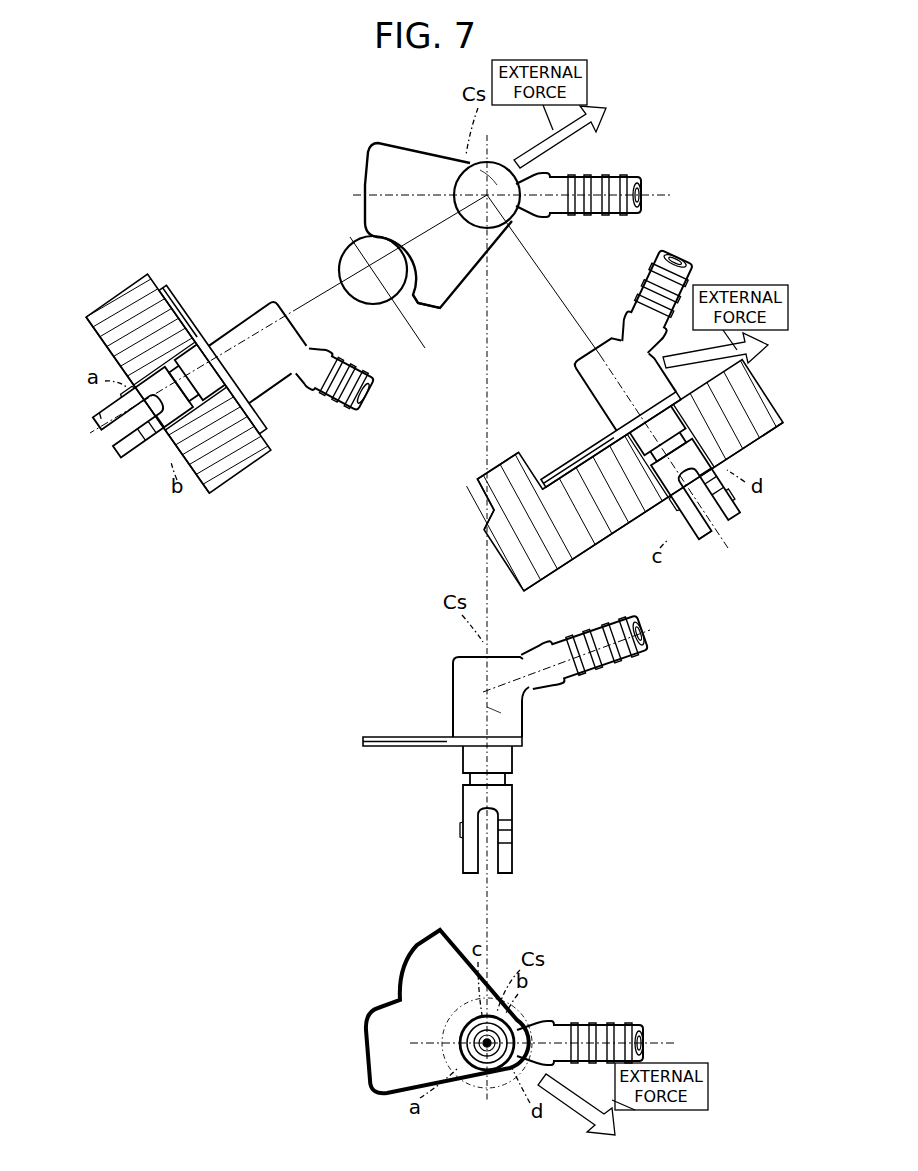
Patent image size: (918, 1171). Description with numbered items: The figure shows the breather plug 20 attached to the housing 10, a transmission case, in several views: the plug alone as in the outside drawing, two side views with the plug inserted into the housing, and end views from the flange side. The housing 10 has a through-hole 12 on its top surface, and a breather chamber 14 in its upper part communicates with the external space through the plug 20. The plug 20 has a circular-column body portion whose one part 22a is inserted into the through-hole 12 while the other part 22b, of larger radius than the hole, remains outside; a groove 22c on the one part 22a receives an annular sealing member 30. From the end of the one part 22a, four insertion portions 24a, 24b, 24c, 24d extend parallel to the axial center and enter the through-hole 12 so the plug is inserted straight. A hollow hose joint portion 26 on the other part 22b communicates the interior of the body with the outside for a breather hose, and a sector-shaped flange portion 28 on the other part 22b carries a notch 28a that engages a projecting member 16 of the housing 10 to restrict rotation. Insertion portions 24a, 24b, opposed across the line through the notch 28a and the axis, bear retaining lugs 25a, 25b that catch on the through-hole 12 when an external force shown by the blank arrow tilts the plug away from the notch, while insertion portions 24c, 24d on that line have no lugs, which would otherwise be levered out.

The housing 10 is at (341, 226).
The through-hole 12 is at (248, 392).
The breather chamber 14 is at (60, 507).
The projecting member 16 is at (352, 265).
The plug for a vehicle 20 is at (641, 110).
The one part of the body portion 22a is at (500, 755).
The other part of the body portion 22b is at (497, 170).
The groove 22c is at (507, 780).
The insertion portion 24a is at (104, 440).
The insertion portion 24b is at (503, 878).
The insertion portion 24c is at (472, 878).
The insertion portion 24d is at (735, 506).
The retaining lug 25a is at (465, 822).
The retaining lug 25b is at (503, 848).
The hose joint portion 26 is at (608, 183).
The flange portion 28 is at (397, 152).
The notch 28a is at (412, 298).
The annular sealing member 30 is at (233, 455).